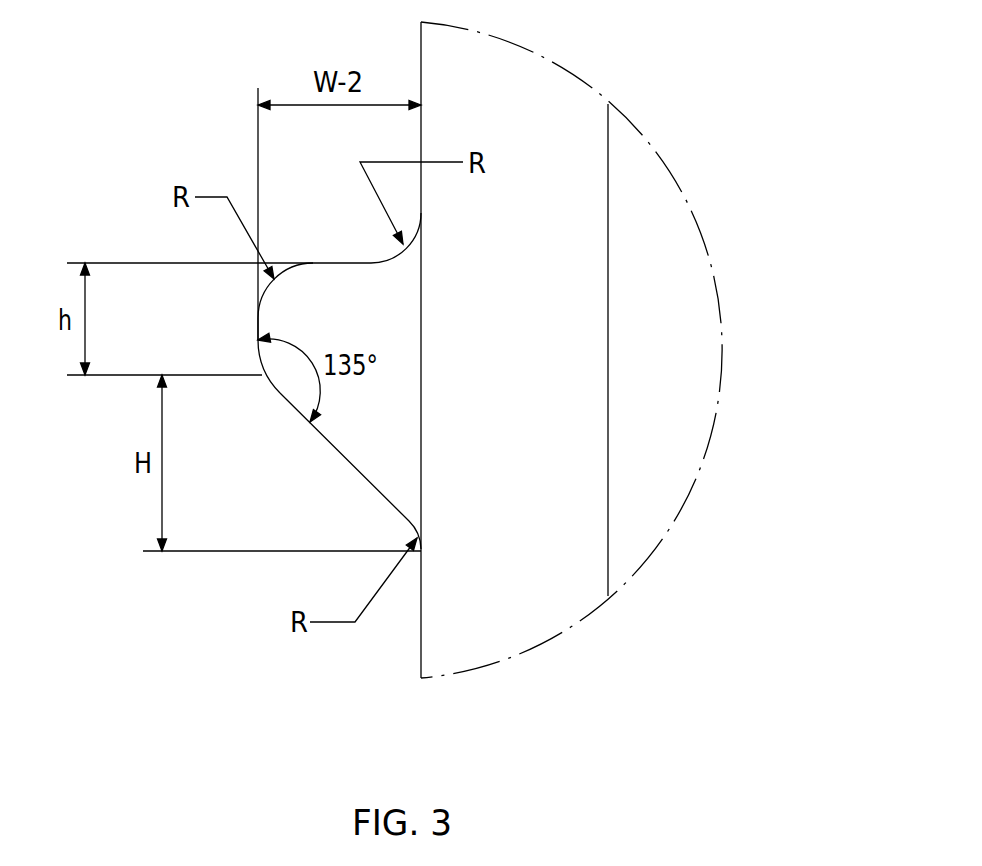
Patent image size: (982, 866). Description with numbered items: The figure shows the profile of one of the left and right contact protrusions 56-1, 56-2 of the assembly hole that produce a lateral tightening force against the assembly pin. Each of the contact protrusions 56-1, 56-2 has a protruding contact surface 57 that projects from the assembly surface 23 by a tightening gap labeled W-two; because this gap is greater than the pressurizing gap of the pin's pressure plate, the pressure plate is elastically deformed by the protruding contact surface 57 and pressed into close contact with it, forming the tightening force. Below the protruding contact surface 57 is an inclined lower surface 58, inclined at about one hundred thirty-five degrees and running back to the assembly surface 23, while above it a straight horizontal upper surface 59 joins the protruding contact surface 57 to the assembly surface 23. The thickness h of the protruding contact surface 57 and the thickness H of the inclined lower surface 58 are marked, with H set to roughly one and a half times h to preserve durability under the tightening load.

The assembly surface 23 is at (565, 337).
The left contact protrusion 56-1 is at (255, 455).
The right contact protrusion 56-2 is at (255, 455).
The protruding contact surface 57 is at (258, 340).
The inclined lower surface 58 is at (340, 452).
The straight horizontal upper surface 59 is at (340, 263).